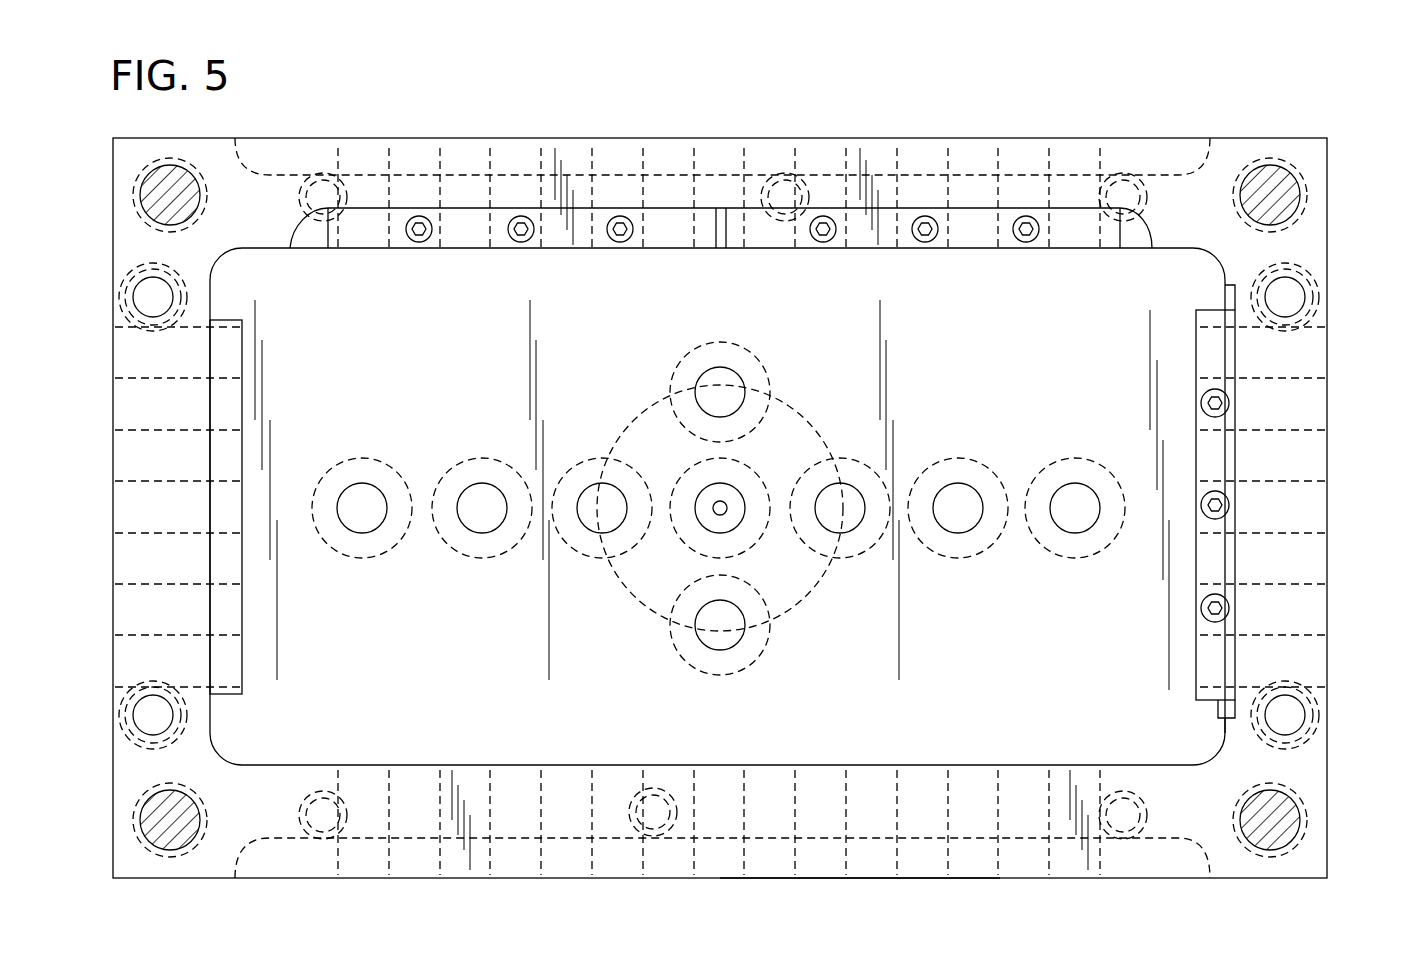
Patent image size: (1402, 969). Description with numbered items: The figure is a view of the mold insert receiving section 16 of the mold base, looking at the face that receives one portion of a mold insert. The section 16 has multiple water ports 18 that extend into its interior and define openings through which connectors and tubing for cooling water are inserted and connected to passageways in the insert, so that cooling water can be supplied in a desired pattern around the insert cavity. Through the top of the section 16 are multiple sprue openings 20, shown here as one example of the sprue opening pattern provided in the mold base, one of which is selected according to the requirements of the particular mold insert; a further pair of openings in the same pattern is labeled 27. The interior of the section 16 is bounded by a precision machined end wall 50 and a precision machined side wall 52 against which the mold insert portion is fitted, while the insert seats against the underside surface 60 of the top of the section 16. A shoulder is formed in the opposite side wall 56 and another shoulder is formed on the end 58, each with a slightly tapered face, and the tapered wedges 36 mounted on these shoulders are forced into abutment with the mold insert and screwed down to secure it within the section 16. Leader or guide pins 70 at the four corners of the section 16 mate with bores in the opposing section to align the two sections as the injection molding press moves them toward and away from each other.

The mold insert receiving section 16 is at (113, 562).
The water ports 18 is at (436, 167).
The sprue openings 20 is at (465, 497).
The ejector pins 27 is at (1063, 497).
The tapered wedges 36 is at (762, 248).
The end wall 50 is at (243, 615).
The side wall 52 is at (968, 765).
The side wall 56 is at (1222, 706).
The end 58 is at (875, 858).
The underside surface 60 is at (540, 634).
The guide pins 70 is at (185, 200).